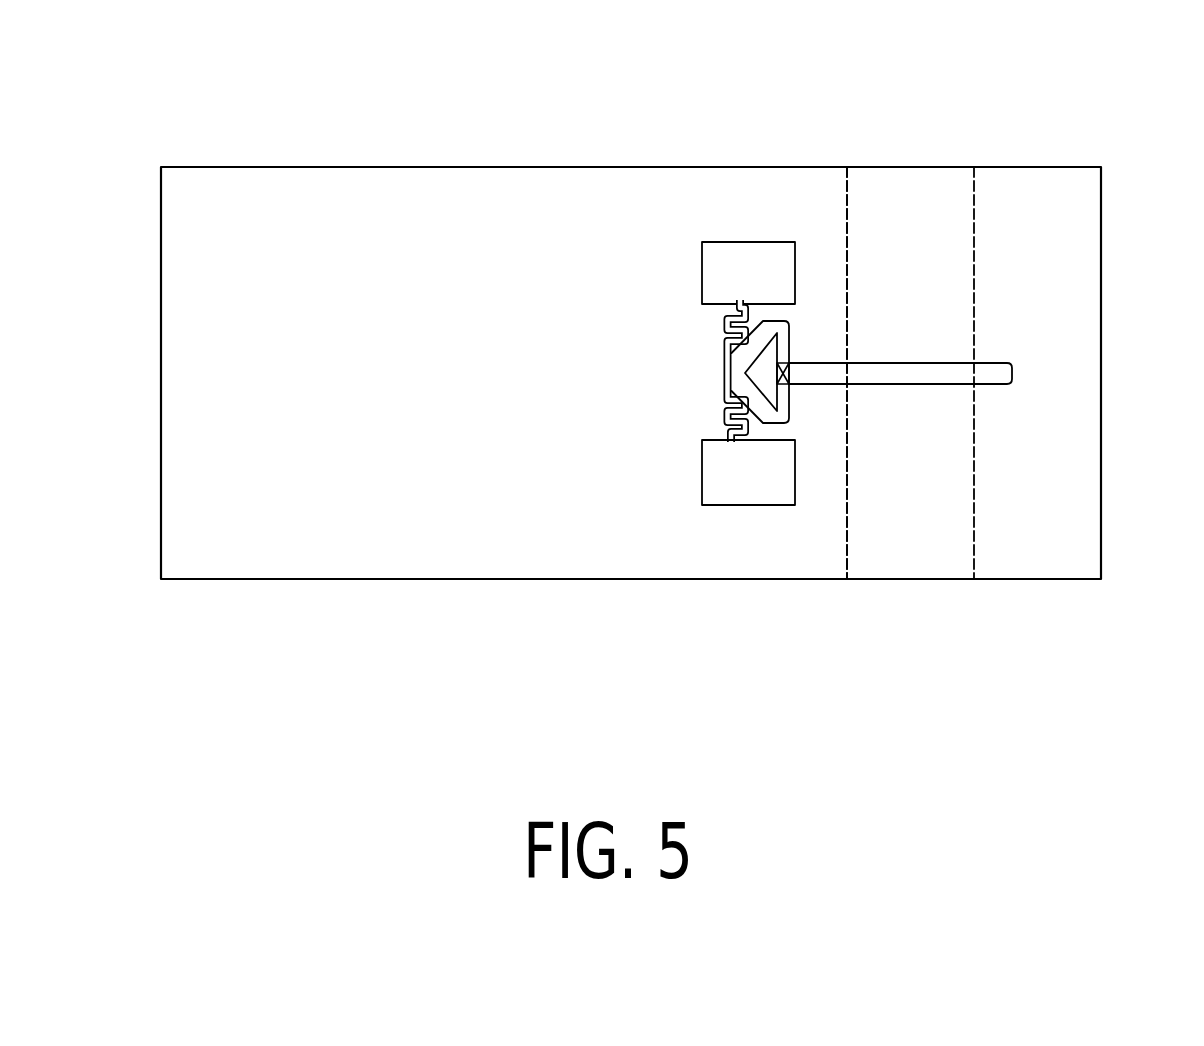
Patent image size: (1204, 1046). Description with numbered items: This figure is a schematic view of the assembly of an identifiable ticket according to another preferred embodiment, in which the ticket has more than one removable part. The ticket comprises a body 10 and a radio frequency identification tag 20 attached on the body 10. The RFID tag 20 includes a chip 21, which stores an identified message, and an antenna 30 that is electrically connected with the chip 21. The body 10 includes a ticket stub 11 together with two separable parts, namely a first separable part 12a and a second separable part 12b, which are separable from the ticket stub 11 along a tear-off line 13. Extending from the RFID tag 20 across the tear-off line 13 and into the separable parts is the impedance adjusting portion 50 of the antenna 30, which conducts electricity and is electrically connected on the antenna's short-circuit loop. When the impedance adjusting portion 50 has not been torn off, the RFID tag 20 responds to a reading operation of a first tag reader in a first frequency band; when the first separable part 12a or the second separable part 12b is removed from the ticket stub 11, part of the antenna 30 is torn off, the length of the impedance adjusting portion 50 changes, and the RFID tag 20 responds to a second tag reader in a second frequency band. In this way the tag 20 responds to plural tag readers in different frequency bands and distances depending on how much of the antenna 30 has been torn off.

The body 10 is at (762, 603).
The ticket stub 11 is at (409, 197).
The first separable part 12a is at (1060, 185).
The second separable part 12b is at (928, 193).
The tear-off line 13 is at (867, 531).
The RFID tag 20 is at (789, 205).
The chip 21 is at (778, 375).
The antenna 30 is at (681, 471).
The impedance adjusting portion 50 is at (998, 372).